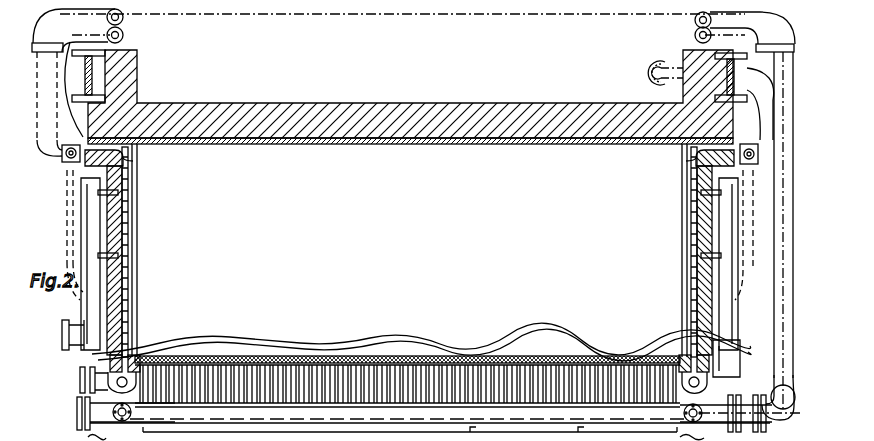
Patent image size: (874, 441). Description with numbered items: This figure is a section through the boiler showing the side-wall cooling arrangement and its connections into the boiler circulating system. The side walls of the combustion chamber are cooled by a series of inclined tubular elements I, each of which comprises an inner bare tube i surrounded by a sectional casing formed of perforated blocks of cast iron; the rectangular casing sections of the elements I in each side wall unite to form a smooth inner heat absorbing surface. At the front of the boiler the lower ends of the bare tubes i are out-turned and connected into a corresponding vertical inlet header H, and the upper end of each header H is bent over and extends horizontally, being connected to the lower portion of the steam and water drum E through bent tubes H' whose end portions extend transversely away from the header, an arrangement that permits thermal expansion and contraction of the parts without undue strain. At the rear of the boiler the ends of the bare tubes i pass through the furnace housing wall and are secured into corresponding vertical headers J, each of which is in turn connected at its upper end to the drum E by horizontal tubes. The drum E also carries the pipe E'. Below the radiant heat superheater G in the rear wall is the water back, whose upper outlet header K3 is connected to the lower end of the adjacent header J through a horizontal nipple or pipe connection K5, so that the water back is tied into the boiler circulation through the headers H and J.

The steam and water drum E is at (409, 113).
The pipe passing through beam E' is at (640, 75).
The vertical inlet header H is at (413, 214).
The tubes H' is at (409, 30).
The inner tube i is at (133, 161).
The tubular element I is at (130, 229).
The vertical header J is at (110, 381).
The radiant heat superheater G is at (292, 357).
The horizontal nipple or pipe connection K5 is at (112, 397).
The upper horizontal header K3 is at (77, 403).